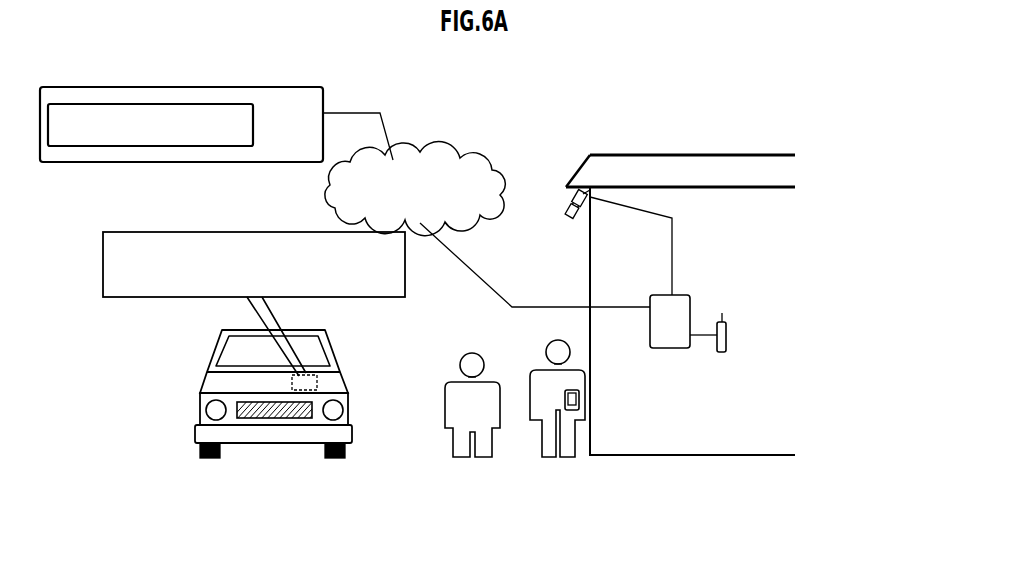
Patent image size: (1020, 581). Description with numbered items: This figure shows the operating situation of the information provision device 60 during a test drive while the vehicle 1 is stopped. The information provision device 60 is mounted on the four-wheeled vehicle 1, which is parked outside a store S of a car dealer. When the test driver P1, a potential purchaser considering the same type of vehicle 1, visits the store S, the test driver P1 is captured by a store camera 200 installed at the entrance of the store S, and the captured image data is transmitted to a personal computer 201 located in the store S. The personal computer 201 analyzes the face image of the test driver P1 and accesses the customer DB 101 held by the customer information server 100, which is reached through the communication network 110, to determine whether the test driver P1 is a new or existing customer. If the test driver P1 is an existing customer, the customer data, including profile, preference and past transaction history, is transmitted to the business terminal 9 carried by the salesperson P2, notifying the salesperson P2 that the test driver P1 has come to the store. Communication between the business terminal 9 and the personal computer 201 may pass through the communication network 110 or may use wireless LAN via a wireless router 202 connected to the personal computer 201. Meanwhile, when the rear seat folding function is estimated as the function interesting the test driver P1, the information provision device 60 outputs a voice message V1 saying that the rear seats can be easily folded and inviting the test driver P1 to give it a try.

The customer information server 100 is at (245, 87).
The customer database 101 is at (256, 126).
The communication network 110 is at (420, 152).
The store S is at (689, 152).
The store camera 200 is at (566, 214).
The personal computer 201 is at (690, 293).
The wireless router 202 is at (727, 330).
The test driver P1 is at (448, 384).
The salesperson P2 is at (532, 380).
The business terminal 9 is at (583, 405).
The vehicle 1 is at (240, 330).
The information provision device 60 is at (338, 384).
The voice message V1 is at (297, 232).